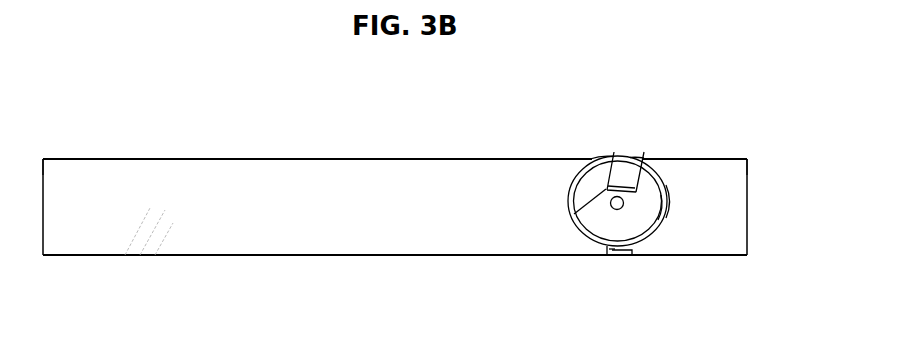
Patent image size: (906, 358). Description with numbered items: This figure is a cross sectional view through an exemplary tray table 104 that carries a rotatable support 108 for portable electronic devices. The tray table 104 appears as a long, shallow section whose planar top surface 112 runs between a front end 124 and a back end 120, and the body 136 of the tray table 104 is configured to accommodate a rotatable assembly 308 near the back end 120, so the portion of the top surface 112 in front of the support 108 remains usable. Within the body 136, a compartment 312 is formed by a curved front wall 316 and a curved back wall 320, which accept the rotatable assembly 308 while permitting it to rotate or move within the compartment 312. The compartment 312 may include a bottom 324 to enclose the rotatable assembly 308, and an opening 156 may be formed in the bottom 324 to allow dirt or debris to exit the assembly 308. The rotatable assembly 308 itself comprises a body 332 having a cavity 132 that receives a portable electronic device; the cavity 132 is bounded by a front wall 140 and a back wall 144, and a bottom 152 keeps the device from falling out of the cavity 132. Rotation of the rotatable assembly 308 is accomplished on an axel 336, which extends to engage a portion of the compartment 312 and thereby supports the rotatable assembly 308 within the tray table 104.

The tray table 104 is at (465, 303).
The top surface 112 is at (147, 139).
The front end 124 is at (44, 158).
The back end 120 is at (748, 158).
The body 136 is at (118, 230).
The rotatable assembly 308 is at (575, 138).
The compartment 312 is at (572, 172).
The curved front wall 316 is at (568, 202).
The body 332 is at (589, 160).
The support 108 is at (642, 160).
The curved back wall 320 is at (666, 187).
The back wall 144 is at (664, 198).
The front wall 140 is at (589, 210).
The axel 336 is at (614, 209).
The cavity 132 is at (630, 141).
The bottom 152 is at (613, 187).
The opening 156 is at (624, 251).
The bottom 324 is at (613, 250).